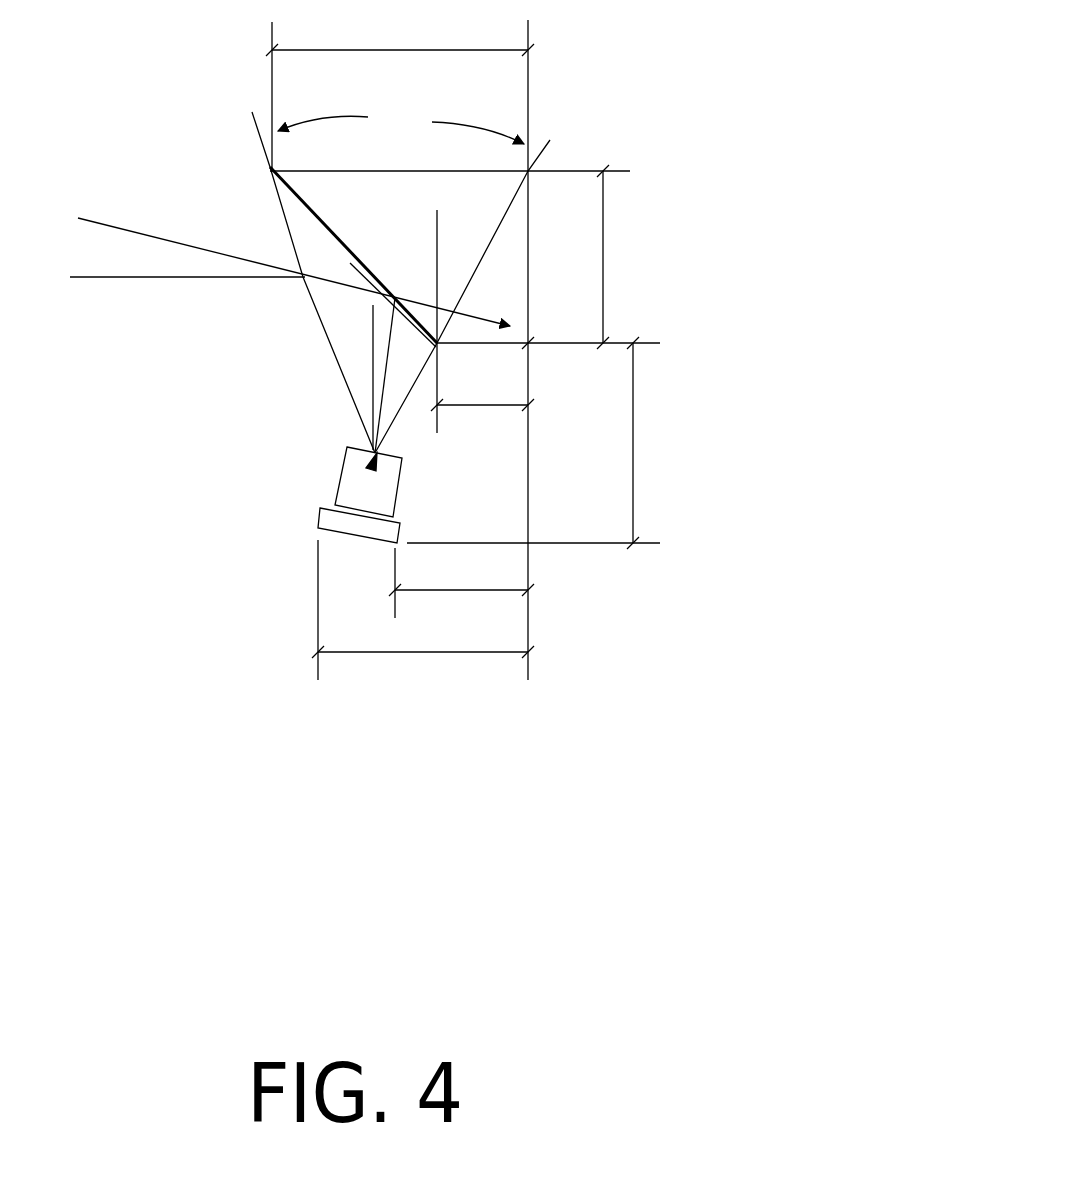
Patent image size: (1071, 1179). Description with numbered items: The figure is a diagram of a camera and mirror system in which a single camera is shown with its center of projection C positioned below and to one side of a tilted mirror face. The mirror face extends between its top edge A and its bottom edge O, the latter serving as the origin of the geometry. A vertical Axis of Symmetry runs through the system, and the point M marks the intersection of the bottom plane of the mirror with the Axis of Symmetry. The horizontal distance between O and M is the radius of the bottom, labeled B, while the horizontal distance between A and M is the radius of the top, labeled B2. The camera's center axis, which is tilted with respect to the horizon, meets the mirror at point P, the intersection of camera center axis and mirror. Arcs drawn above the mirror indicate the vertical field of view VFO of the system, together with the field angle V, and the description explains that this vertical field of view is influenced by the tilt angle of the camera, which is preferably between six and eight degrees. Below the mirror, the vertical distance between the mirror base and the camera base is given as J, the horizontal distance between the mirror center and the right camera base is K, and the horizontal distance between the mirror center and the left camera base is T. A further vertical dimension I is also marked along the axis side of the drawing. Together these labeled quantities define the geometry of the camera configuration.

The axis of symmetry Axis of Symmetry is at (545, 96).
The horizontal distance between A and M B2 is at (400, 96).
The vertical field of view VFO is at (402, 83).
The field angle V is at (401, 126).
The top edge of mirror A is at (438, 282).
The intersection of camera center axis and mirror P is at (391, 362).
The center of projection of camera C is at (415, 418).
The bottom edge of mirror O is at (517, 296).
The intersection of bottom plane of mirror and axis of symmetry M is at (536, 357).
The distance I is at (591, 257).
The vertical distance between mirror base and camera base J is at (533, 443).
The horizontal distance between O and M B is at (482, 391).
The horizontal distance between mirror center and right camera base K is at (461, 583).
The horizontal distance between mirror center and left camera base T is at (423, 610).